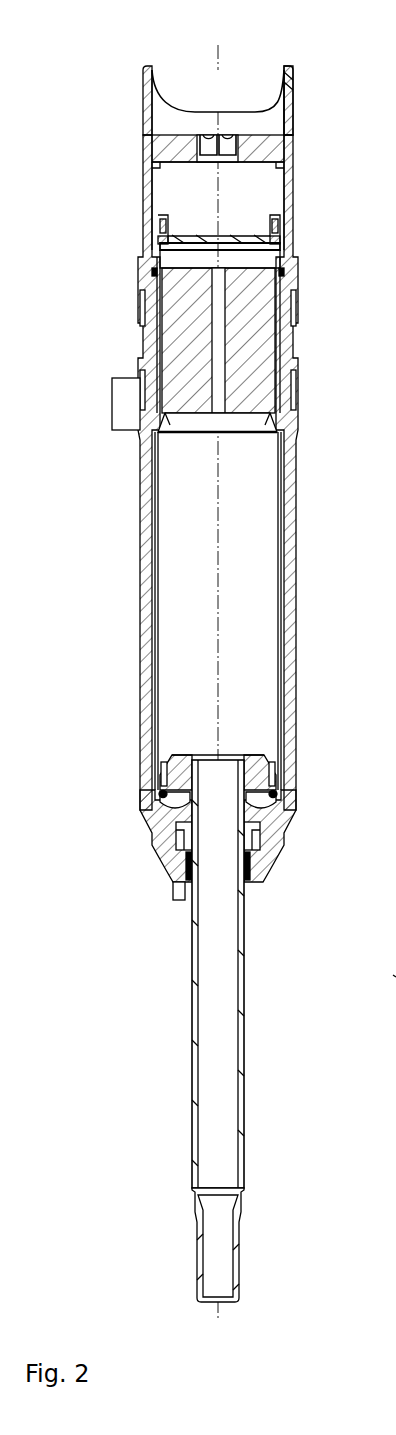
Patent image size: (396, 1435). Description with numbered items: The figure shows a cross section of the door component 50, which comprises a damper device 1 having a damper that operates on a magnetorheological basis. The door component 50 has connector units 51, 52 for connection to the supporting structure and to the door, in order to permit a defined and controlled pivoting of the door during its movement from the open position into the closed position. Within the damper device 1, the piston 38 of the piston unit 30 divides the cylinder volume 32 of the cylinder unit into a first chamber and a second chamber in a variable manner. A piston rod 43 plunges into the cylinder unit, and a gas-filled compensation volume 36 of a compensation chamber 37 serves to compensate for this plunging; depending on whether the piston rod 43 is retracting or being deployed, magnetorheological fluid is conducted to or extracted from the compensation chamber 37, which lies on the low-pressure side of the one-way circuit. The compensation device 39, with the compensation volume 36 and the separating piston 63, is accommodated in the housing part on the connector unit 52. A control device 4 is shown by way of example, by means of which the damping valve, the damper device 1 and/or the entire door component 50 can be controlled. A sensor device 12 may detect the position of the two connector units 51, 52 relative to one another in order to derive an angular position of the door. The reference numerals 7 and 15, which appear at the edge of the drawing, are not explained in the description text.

The damper device 1 is at (118, 255).
The control device 4 is at (122, 400).
The wheel carrier 7 is at (391, 965).
The sensor device 12 is at (173, 889).
The vehicle body 15 is at (395, 1153).
The piston unit 30 is at (130, 768).
The cylinder volume 32 is at (172, 585).
The compensation volume 36 is at (257, 187).
The compensation chamber 37 is at (265, 262).
The piston 38 is at (177, 783).
The compensation device 39 is at (140, 178).
The piston rod 43 is at (232, 1018).
The door component 50 is at (110, 70).
The connector unit 51 is at (237, 1285).
The connector unit 52 is at (294, 78).
The separating piston 63 is at (277, 228).